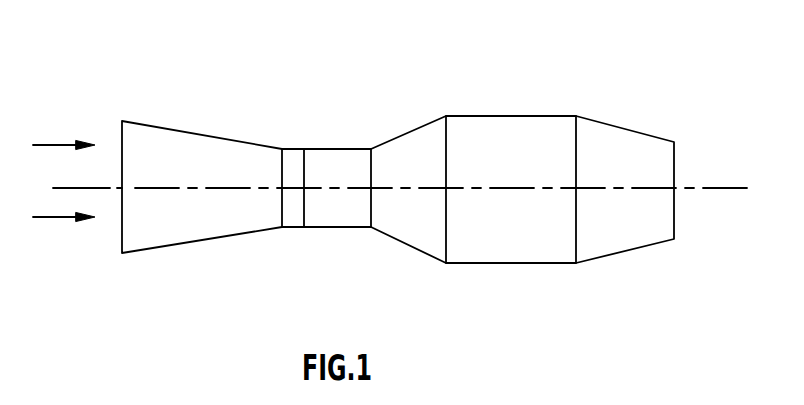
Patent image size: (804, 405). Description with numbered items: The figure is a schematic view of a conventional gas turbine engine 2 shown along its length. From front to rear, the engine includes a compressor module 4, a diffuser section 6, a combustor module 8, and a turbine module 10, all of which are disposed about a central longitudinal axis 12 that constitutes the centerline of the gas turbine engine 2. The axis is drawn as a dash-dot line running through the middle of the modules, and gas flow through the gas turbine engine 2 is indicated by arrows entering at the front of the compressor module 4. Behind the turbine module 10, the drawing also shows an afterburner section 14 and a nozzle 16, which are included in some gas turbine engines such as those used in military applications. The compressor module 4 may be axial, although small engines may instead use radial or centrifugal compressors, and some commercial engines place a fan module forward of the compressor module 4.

The gas turbine engine 2 is at (525, 44).
The compressor module 4 is at (145, 122).
The diffuser section 6 is at (297, 149).
The combustor module 8 is at (354, 228).
The turbine module 10 is at (417, 250).
The central longitudinal axis 12 is at (728, 190).
The afterburner section 14 is at (498, 116).
The nozzle 16 is at (610, 125).